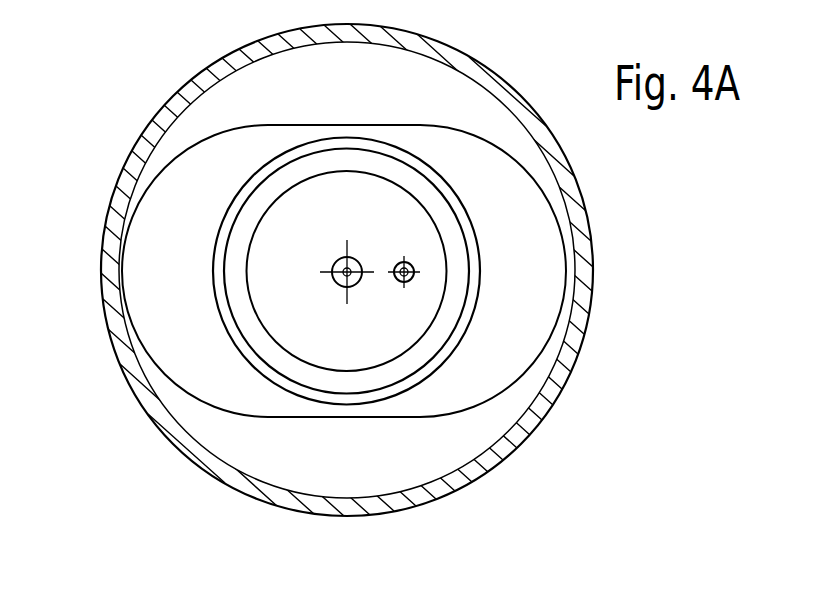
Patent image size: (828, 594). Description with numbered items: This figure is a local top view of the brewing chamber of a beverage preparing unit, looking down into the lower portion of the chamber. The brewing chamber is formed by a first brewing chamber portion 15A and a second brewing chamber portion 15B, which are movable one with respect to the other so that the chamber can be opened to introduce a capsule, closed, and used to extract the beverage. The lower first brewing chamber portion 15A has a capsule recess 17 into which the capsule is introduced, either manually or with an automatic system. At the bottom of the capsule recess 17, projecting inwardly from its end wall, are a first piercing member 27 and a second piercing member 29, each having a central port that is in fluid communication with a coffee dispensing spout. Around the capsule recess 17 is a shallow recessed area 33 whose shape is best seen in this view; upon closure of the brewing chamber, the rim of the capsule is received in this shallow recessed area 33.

The first brewing chamber portion 15A is at (542, 170).
The second brewing chamber portion 15B is at (589, 228).
The capsule recess 17 is at (322, 330).
The first piercing member 27 is at (402, 262).
The second piercing member 29 is at (338, 258).
The shallow recessed area 33 is at (155, 283).